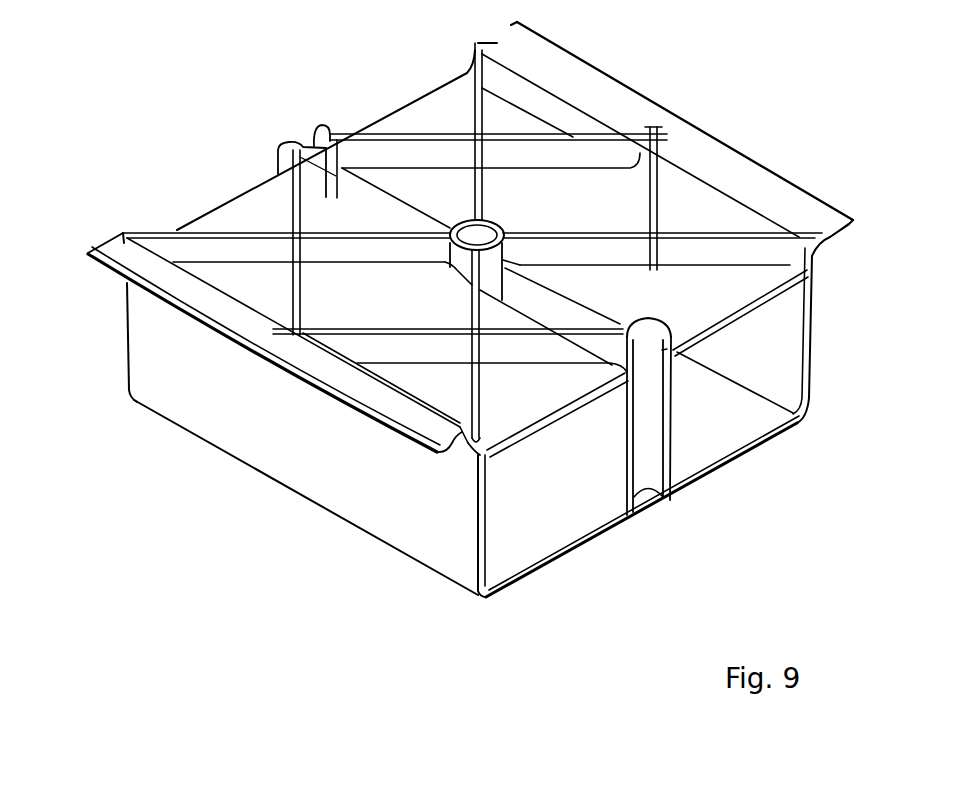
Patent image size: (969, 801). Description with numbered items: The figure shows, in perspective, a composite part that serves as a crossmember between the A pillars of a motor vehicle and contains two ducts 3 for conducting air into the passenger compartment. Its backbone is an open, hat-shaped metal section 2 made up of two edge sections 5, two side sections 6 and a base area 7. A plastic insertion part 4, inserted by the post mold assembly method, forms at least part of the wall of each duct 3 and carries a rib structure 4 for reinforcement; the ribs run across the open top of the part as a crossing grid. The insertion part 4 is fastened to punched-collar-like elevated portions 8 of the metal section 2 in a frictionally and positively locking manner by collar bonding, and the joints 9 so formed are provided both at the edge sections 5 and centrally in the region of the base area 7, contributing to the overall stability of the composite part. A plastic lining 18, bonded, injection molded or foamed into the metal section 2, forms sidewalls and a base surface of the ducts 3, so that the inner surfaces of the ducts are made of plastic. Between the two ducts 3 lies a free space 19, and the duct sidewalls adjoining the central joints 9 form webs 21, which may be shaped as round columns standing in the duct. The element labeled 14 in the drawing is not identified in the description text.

The metal section 2 is at (463, 335).
The duct 3 is at (733, 397).
The insertion part 4 is at (558, 407).
The edge sections 5 is at (103, 247).
The side sections 6 is at (137, 360).
The base area 7 is at (747, 458).
The elevated portions 8 is at (452, 433).
The joints 9 is at (845, 241).
The upper post 14 is at (350, 137).
The lining 18 is at (486, 515).
The free space 19 is at (480, 232).
The webs 21 is at (625, 440).